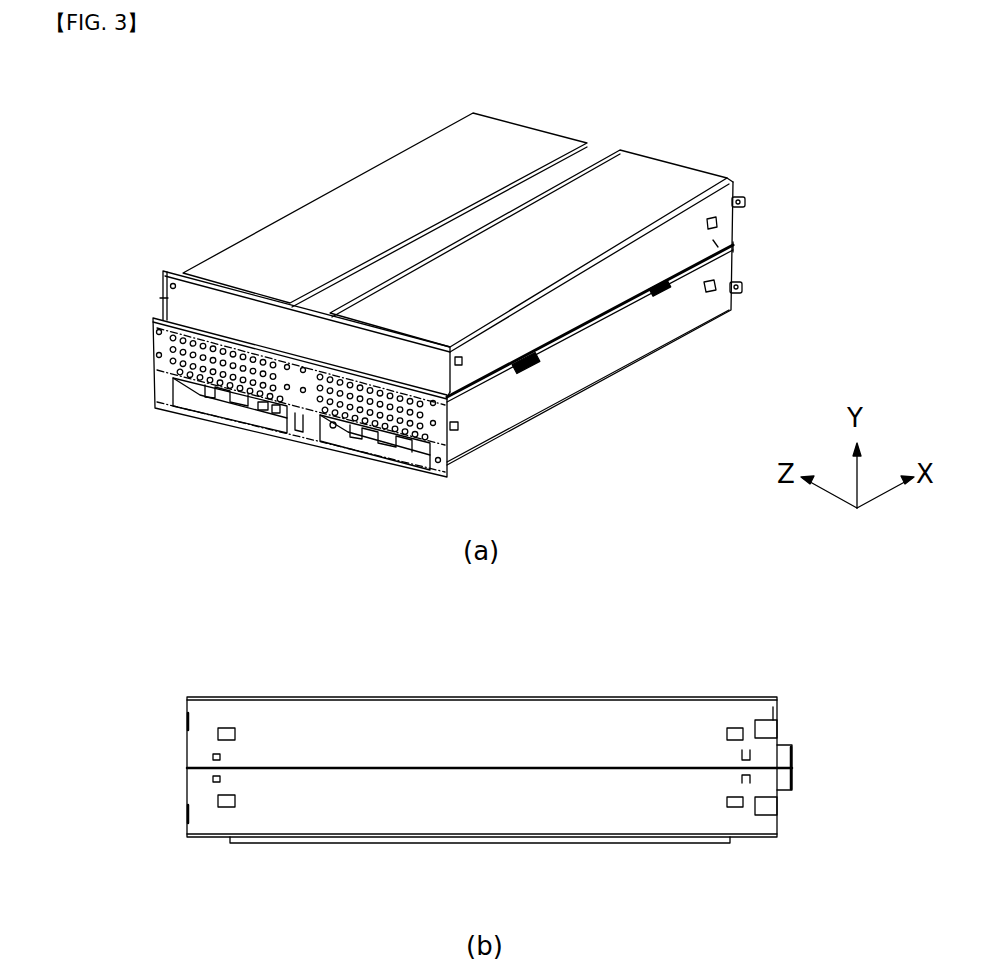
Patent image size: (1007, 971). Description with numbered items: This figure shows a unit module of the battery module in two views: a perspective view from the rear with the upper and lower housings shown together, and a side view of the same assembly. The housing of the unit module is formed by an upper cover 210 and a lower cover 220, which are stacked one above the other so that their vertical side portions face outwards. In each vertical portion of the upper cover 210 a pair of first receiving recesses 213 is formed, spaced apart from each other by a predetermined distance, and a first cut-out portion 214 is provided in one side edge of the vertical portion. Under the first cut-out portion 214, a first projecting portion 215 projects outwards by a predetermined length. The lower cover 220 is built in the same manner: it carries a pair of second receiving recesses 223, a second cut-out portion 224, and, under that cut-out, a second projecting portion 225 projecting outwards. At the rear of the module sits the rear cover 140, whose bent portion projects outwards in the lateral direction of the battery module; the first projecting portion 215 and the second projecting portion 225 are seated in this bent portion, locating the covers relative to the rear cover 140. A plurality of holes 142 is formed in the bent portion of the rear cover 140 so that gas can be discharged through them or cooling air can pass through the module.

The rear cover 140 is at (162, 300).
The holes 142 is at (153, 356).
The upper cover 210 is at (494, 122).
The first receiving recesses 213 is at (722, 224).
The first cut-out portion 214 is at (780, 728).
The first projecting portion 215 is at (797, 752).
The lower cover 220 is at (667, 332).
The second receiving recesses 223 is at (745, 291).
The second cut-out portion 224 is at (780, 810).
The second projecting portion 225 is at (795, 775).